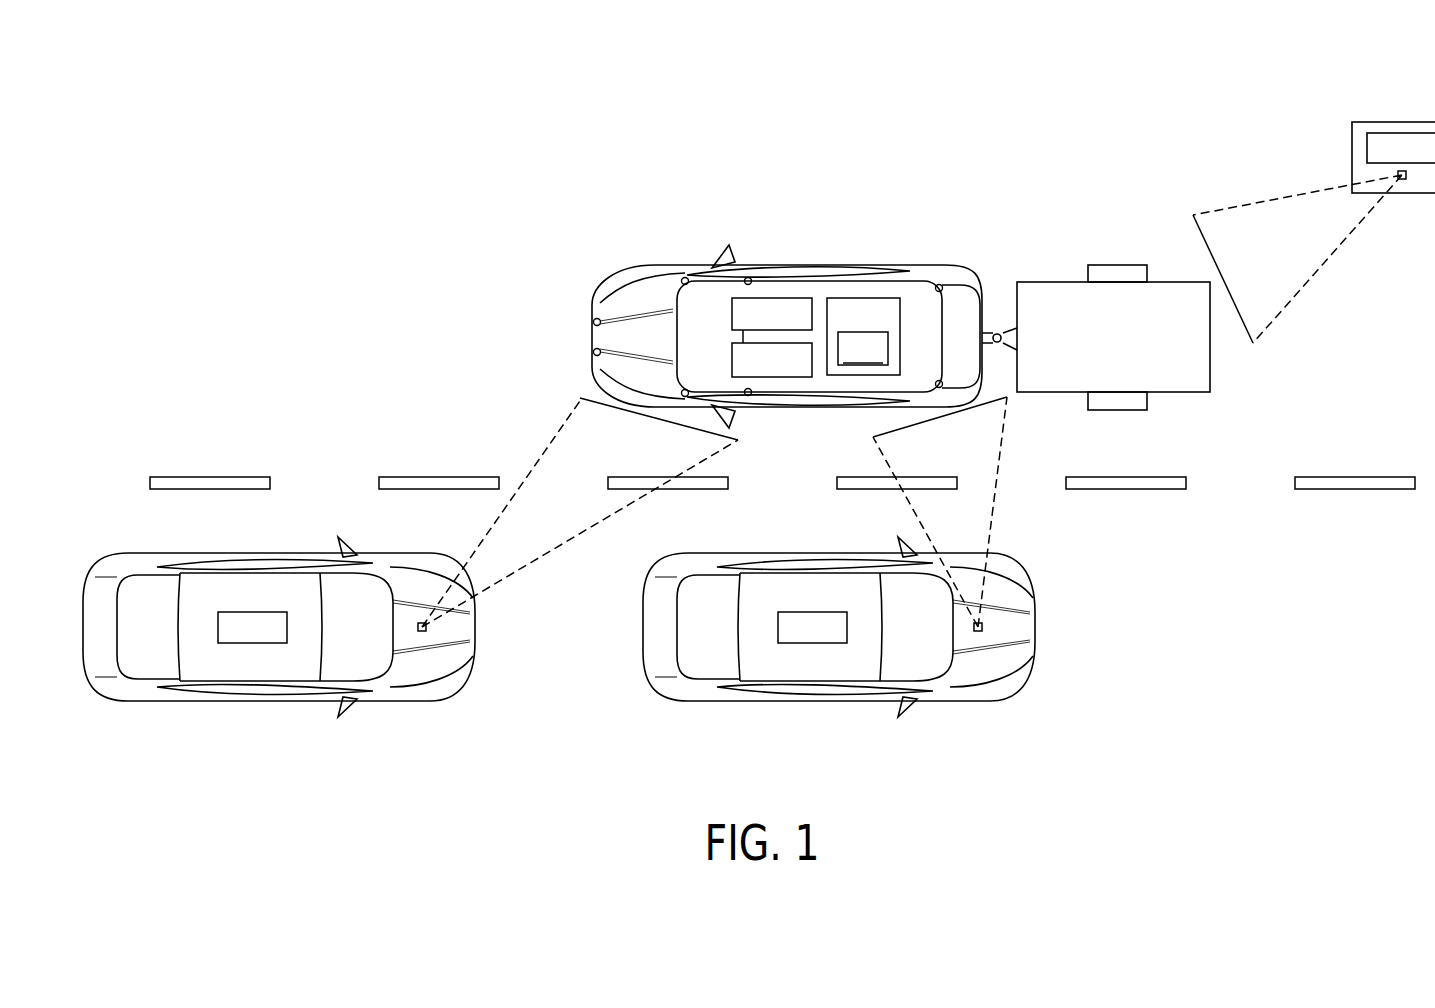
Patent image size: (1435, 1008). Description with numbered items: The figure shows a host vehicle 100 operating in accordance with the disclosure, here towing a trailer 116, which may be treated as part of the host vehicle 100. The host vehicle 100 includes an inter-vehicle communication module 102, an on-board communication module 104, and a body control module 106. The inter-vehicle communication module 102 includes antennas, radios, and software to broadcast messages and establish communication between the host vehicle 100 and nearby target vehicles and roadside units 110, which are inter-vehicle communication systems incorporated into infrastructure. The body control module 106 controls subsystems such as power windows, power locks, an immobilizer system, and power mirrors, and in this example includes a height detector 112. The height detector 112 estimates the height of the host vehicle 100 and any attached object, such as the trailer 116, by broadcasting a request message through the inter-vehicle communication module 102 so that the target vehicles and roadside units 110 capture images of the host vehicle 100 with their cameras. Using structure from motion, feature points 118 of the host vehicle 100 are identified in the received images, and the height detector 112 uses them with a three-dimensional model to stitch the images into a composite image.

The host vehicle 100 is at (633, 267).
The inter-vehicle communication module 102 is at (787, 298).
The on-board communication module 104 is at (790, 377).
The body control module 106 is at (864, 298).
The roadside units 110 is at (1401, 122).
The height detector 112 is at (863, 349).
The trailer 116 is at (1211, 378).
The feature points 118 is at (593, 322).